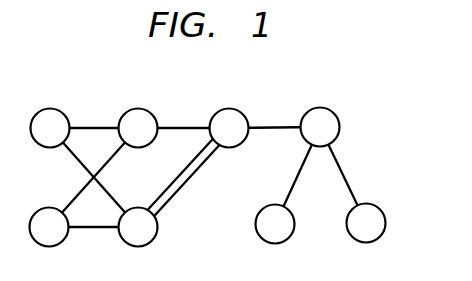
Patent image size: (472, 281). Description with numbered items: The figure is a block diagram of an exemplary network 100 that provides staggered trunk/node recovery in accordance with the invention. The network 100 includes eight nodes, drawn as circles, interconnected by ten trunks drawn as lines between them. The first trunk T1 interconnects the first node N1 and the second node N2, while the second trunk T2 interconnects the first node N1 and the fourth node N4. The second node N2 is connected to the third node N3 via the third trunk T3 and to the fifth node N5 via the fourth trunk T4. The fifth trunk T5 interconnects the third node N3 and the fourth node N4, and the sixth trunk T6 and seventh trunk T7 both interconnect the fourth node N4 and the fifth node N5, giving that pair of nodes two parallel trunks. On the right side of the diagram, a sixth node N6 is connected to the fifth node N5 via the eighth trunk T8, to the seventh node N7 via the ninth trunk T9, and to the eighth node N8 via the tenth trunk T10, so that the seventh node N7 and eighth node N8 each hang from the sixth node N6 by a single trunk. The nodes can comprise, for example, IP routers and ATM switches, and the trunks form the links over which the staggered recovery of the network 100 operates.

The network 100 is at (195, 72).
The first node N1 is at (50, 128).
The second node N2 is at (138, 128).
The third node N3 is at (49, 227).
The fourth node N4 is at (138, 227).
The fifth node N5 is at (229, 128).
The sixth node N6 is at (320, 127).
The seventh node N7 is at (275, 224).
The eighth node N8 is at (366, 223).
The first trunk T1 is at (94, 116).
The second trunk T2 is at (93, 177).
The third trunk T3 is at (95, 177).
The fourth trunk T4 is at (183, 116).
The fifth trunk T5 is at (93, 238).
The sixth trunk T6 is at (180, 174).
The seventh trunk T7 is at (186, 180).
The eighth trunk T8 is at (274, 115).
The ninth trunk T9 is at (294, 176).
The tenth trunk T10 is at (349, 175).